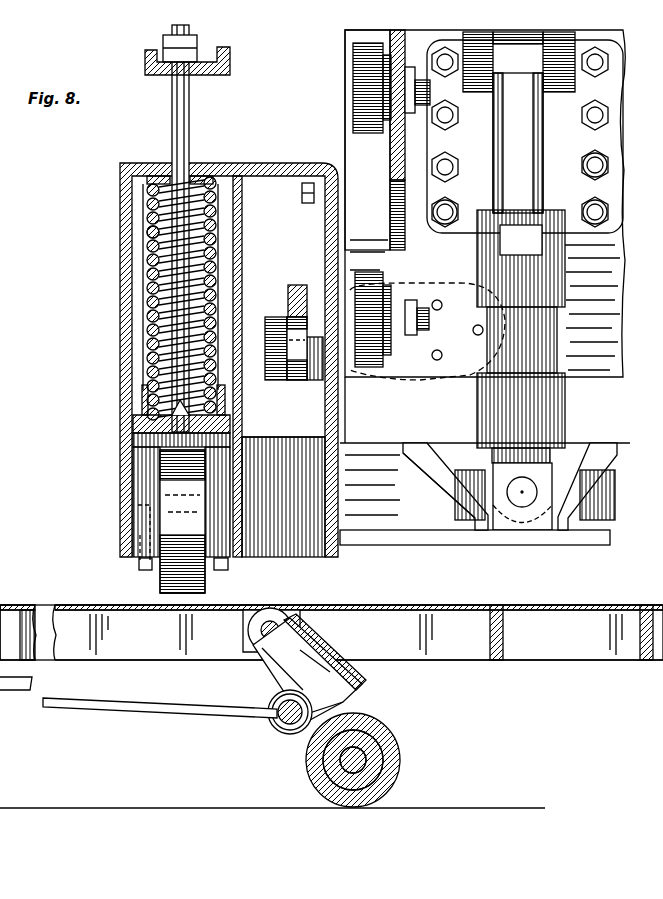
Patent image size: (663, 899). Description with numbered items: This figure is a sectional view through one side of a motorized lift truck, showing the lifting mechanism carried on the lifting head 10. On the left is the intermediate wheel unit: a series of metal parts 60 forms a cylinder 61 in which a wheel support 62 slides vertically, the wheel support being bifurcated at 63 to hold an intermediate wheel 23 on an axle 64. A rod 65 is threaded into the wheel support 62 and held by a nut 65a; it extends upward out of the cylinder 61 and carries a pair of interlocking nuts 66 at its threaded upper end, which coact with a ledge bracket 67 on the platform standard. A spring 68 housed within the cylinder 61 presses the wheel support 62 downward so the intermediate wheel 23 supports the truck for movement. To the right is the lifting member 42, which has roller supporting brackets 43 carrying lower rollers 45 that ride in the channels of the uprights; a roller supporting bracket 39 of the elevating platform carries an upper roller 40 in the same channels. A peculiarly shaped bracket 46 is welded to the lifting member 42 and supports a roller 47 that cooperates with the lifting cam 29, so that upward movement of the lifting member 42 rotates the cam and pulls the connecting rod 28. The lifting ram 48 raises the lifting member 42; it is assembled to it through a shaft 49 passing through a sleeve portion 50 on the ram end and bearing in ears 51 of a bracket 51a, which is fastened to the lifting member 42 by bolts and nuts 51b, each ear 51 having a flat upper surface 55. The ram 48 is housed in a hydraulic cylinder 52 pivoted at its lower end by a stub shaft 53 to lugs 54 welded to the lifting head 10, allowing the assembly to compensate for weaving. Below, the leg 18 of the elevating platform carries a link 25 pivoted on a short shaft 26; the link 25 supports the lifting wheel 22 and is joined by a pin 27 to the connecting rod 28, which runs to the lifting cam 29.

The lifting head 10 is at (412, 546).
The leg portion 18 is at (378, 604).
The lifting wheel 22 is at (395, 732).
The intermediate wheel 23 is at (157, 577).
The link 25 is at (355, 690).
The short shaft 26 is at (272, 620).
The pin 27 is at (290, 714).
The connecting rod 28 is at (43, 705).
The lifting cam 29 is at (288, 297).
The roller supporting bracket 39 is at (390, 137).
The upper roller 40 is at (360, 92).
The lifting member 42 is at (343, 45).
The roller supporting bracket 43 is at (392, 222).
The lower roller 45 is at (368, 352).
The bracket 46 is at (287, 382).
The roller 47 is at (315, 338).
The lifting ram 48 is at (518, 143).
The shaft 49 is at (455, 160).
The sleeve portion 50 is at (503, 84).
The ear 51 is at (470, 60).
The bracket 51a is at (606, 200).
The bolts and nuts 51b is at (452, 200).
The hydraulic cylinder 52 is at (530, 273).
The stub shaft 53 is at (523, 497).
The lug 54 is at (502, 525).
The flat upper surface 55 is at (460, 35).
The metal parts 60 is at (262, 162).
The cylinder 61 is at (138, 262).
The wheel support 62 is at (143, 440).
The bifurcation 63 is at (155, 477).
The axle 64 is at (140, 517).
The rod 65 is at (148, 285).
The nut 65a is at (148, 422).
The interlocking nuts 66 is at (197, 46).
The ledge bracket 67 is at (230, 71).
The spring 68 is at (148, 232).